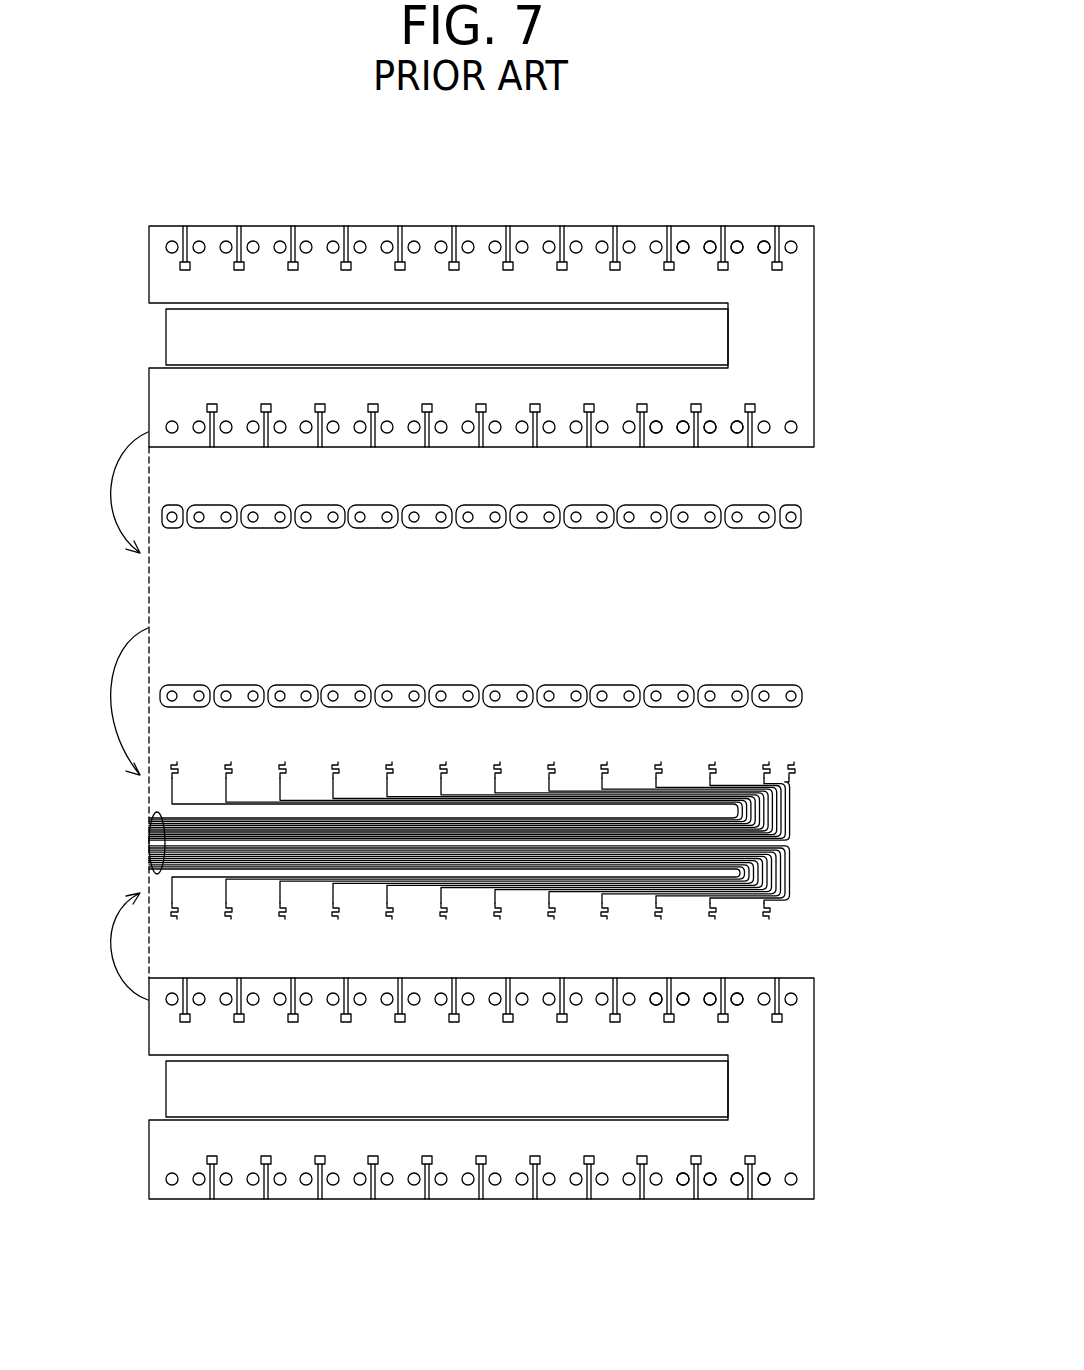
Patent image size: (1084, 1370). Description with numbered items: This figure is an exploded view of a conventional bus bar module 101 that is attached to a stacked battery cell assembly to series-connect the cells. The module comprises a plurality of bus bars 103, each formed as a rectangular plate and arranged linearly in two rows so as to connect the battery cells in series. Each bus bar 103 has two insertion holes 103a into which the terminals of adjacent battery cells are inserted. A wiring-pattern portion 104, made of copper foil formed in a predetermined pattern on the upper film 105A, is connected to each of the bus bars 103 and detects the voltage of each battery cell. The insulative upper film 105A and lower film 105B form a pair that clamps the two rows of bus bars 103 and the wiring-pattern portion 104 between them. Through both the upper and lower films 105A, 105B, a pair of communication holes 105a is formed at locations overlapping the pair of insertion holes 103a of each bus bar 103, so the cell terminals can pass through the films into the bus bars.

The bus bar module 101 is at (850, 144).
The bus bar 103 is at (750, 505).
The insertion hole 103a is at (655, 522).
The wiring-pattern portion 104 is at (792, 812).
The upper film 105A is at (780, 322).
The lower film 105B is at (780, 1072).
The communication hole 105a is at (709, 241).